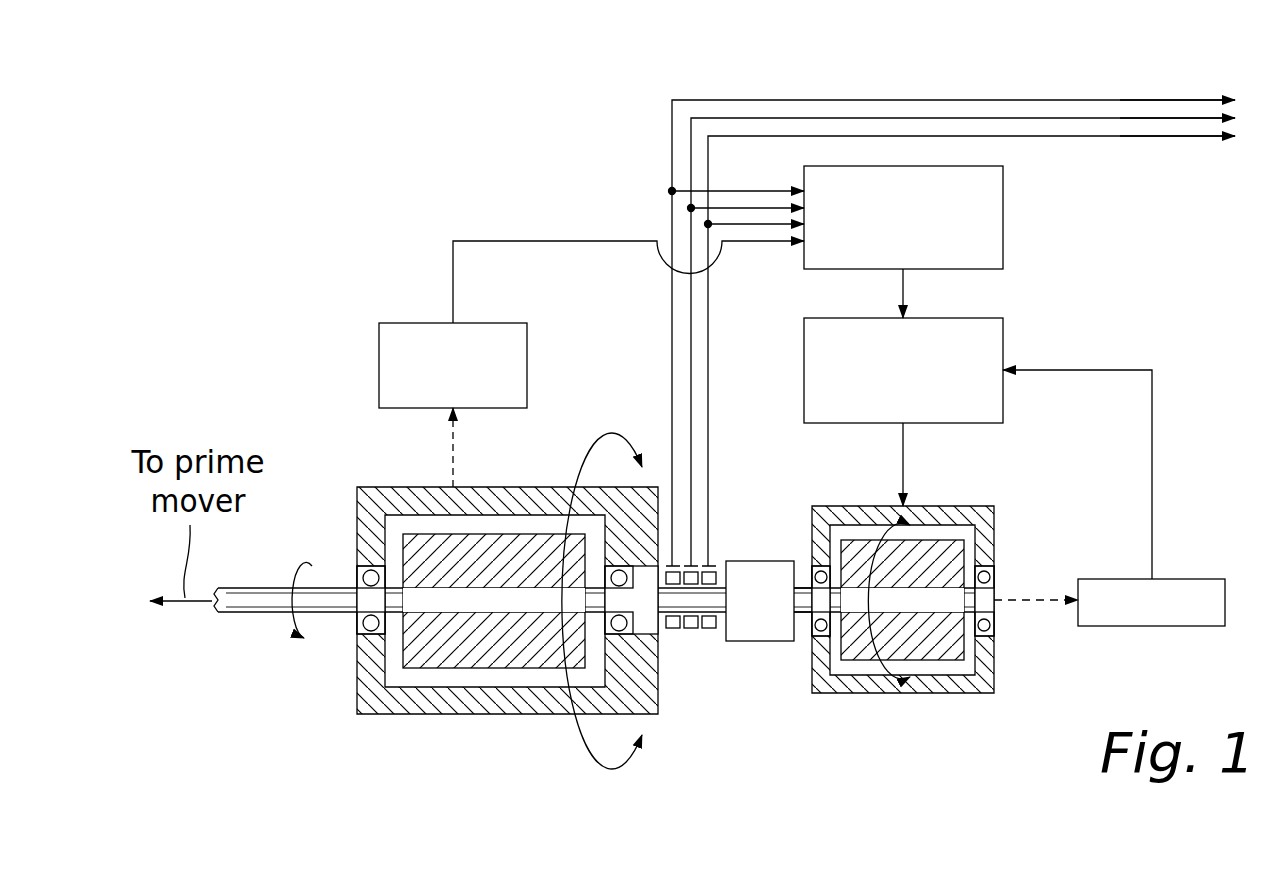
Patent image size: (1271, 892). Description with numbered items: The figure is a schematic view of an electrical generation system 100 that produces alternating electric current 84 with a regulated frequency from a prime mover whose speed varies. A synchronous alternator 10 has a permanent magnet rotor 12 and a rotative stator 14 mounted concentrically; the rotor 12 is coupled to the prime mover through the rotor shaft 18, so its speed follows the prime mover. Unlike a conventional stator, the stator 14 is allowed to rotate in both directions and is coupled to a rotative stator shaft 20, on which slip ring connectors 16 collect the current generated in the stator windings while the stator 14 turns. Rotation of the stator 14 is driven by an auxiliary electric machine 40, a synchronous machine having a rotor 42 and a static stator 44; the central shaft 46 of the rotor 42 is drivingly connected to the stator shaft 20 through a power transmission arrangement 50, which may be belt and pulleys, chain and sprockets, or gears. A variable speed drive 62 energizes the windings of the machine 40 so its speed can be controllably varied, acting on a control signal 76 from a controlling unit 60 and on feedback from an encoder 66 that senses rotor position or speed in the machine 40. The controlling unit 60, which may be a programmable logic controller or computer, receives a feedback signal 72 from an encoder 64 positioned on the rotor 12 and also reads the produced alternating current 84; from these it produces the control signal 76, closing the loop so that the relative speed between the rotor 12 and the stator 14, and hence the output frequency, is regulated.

The electrical generation system 100 is at (365, 268).
The synchronous alternator 10 is at (480, 646).
The rotor 12 is at (462, 670).
The rotative stator 14 is at (380, 714).
The slip ring connectors 16 is at (692, 630).
The rotor shaft 18 is at (260, 603).
The stator shaft 20 is at (720, 630).
The auxiliary electric machine 40 is at (913, 674).
The rotor 42 is at (858, 670).
The stator 44 is at (955, 693).
The central shaft 46 is at (806, 587).
The power transmission arrangement 50 is at (760, 641).
The controlling unit 60 is at (1003, 214).
The variable speed drive 62 is at (957, 423).
The encoder 64 is at (379, 375).
The encoder 66 is at (1187, 579).
The feedback signal 72 is at (602, 241).
The control signal 76 is at (905, 292).
The alternating electric current 84 is at (1032, 100).